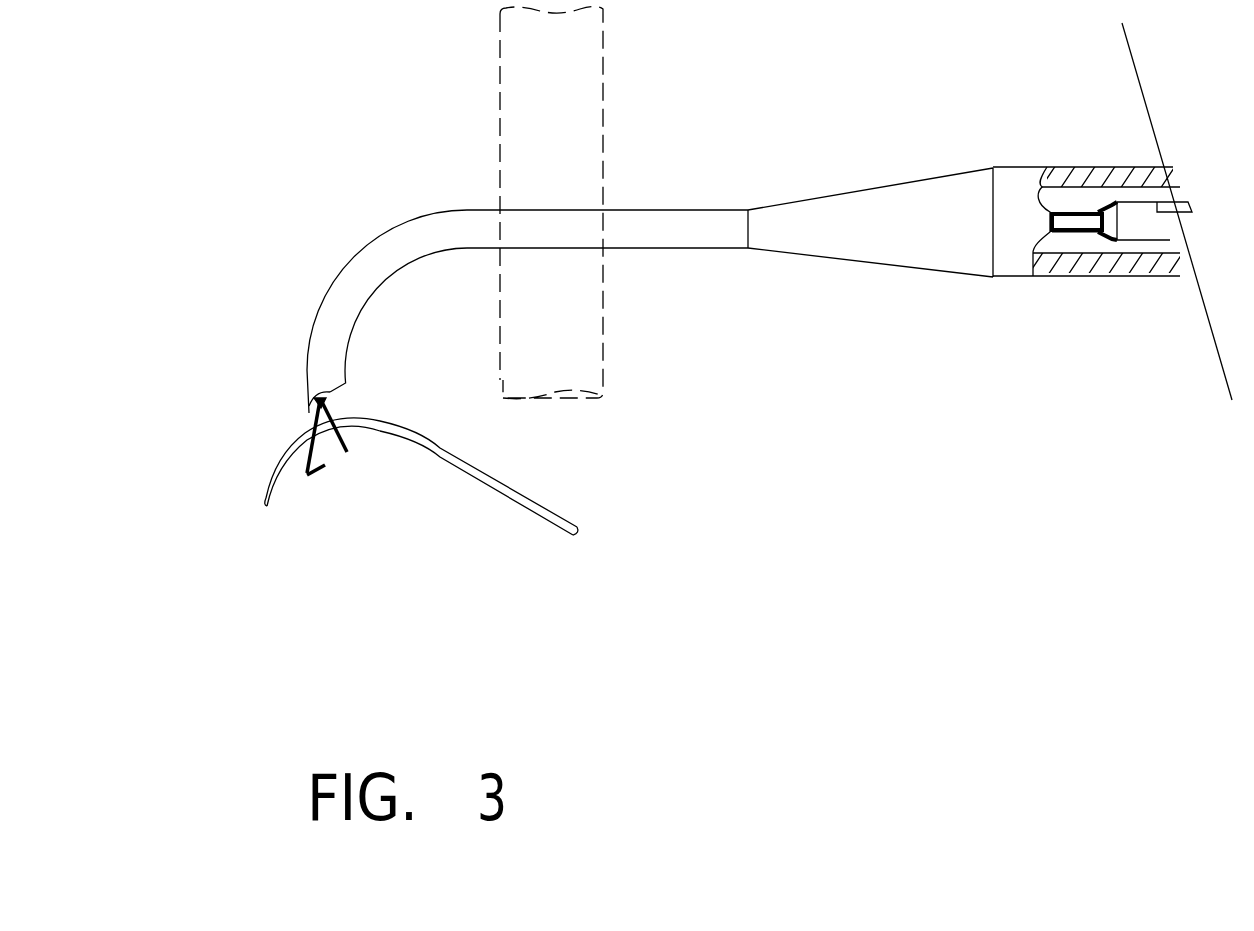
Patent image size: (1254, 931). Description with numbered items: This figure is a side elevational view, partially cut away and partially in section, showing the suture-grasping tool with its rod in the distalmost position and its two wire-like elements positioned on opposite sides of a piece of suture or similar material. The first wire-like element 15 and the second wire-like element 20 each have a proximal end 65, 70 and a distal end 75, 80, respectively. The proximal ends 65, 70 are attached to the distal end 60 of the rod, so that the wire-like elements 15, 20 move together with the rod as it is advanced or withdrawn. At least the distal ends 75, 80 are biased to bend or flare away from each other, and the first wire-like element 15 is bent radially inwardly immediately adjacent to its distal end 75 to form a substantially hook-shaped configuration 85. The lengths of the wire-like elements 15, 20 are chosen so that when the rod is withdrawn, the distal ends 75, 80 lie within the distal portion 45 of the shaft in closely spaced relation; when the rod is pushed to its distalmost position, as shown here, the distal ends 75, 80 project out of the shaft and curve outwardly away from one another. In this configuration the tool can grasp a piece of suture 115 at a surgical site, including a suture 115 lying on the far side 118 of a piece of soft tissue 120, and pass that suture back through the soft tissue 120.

The first wire-like element 15 is at (303, 475).
The second wire-like element 20 is at (343, 445).
The distal portion of shaft 45 is at (358, 265).
The distal end of rod 60 is at (1140, 218).
The proximal end of first wire-like element 65 is at (1082, 212).
The proximal end of second wire-like element 70 is at (1073, 233).
The distal end of first wire-like element 75 is at (327, 465).
The distal end of second wire-like element 80 is at (347, 452).
The hook-shaped configuration 85 is at (307, 473).
The suture 115 is at (577, 532).
The far side of soft tissue 118 is at (467, 123).
The soft tissue 120 is at (562, 100).